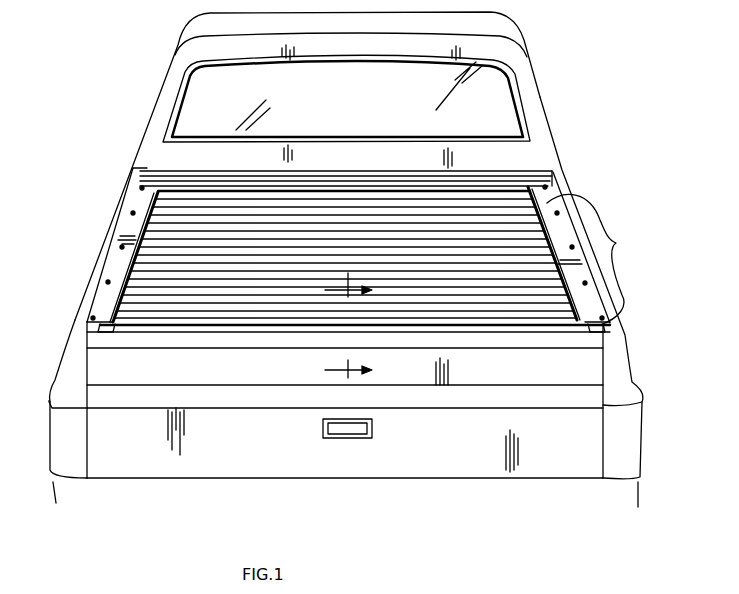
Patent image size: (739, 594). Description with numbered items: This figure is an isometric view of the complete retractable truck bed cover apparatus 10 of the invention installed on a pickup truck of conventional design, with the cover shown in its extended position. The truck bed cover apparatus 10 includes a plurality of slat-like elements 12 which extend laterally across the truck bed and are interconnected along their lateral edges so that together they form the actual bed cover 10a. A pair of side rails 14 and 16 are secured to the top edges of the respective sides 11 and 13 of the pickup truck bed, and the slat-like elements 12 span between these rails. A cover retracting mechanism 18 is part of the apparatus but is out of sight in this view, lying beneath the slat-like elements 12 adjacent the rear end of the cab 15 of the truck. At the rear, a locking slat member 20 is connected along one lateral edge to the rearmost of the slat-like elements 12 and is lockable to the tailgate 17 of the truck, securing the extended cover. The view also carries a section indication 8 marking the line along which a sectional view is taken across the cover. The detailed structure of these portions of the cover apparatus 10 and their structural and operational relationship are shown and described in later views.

The section line 8- 8 is at (348, 330).
The truck bed cover apparatus 10 is at (227, 186).
The bed cover 10a is at (599, 259).
The side of pickup truck bed 11 is at (127, 190).
The slat-like elements 12 is at (136, 287).
The side of pickup truck bed 13 is at (627, 325).
The side rail 14 is at (548, 200).
The cab 15 is at (182, 40).
The side rail 16 is at (130, 225).
The tailgate 17 is at (560, 455).
The cover retracting mechanism 18 is at (182, 188).
The locking slat member 20 is at (236, 329).